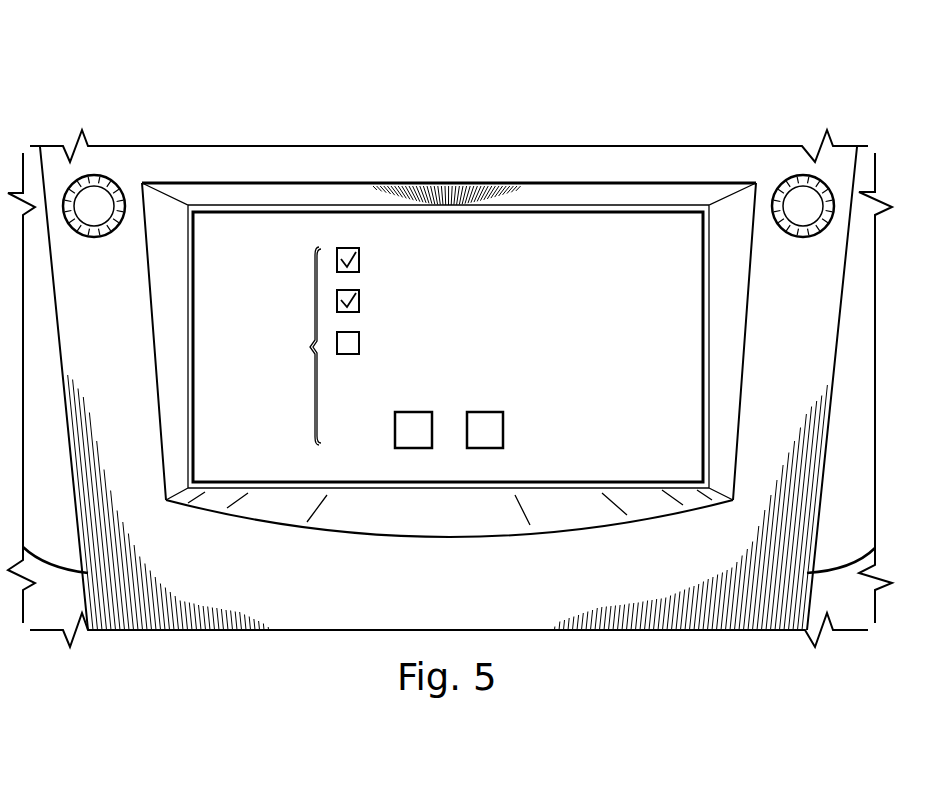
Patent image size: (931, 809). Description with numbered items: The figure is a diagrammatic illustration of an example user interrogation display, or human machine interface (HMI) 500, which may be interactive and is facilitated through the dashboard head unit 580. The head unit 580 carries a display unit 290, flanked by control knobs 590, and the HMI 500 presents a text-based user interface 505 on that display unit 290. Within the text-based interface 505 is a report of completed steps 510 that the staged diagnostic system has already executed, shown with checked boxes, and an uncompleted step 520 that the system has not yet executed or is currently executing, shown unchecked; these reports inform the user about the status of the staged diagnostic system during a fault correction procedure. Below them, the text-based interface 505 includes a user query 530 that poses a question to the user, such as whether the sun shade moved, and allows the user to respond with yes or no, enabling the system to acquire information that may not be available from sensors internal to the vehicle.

The human machine interface 500 is at (652, 70).
The display unit 290 is at (258, 232).
The control knobs 590 is at (113, 177).
The head unit 580 is at (293, 622).
The text-based user interface 505 is at (449, 345).
The completed steps 510 is at (577, 247).
The uncompleted steps 520 is at (549, 341).
The user query 530 is at (564, 373).